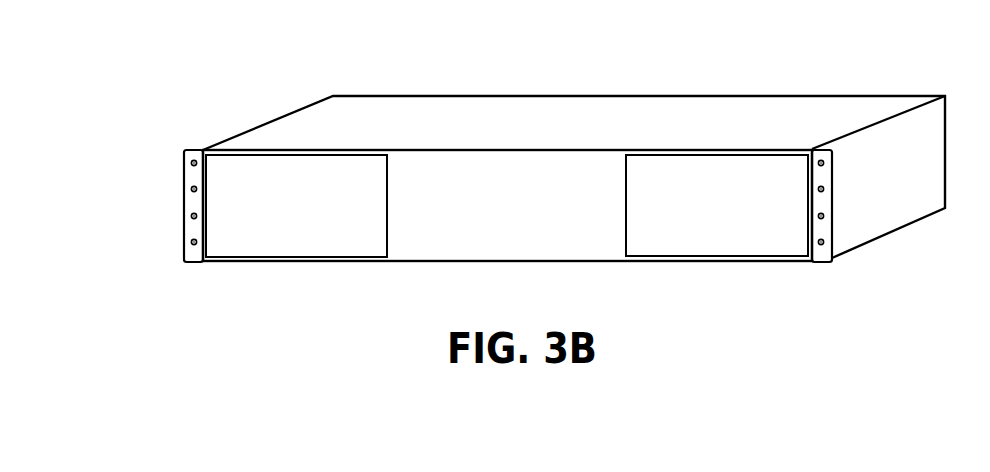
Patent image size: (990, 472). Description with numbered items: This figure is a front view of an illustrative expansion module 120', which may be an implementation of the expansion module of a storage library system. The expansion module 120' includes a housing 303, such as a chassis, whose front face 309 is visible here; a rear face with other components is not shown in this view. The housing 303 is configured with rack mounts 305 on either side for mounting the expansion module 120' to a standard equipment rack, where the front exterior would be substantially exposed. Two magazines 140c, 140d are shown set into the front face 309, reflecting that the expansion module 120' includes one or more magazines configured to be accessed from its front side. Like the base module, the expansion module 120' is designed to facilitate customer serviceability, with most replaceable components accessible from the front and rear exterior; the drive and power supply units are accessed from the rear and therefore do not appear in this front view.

The expansion module 120' is at (522, 134).
The housing 303 is at (297, 111).
The rack mounts 305 is at (183, 188).
The front face 309 is at (728, 130).
The magazine 140c is at (318, 228).
The magazine 140d is at (740, 228).